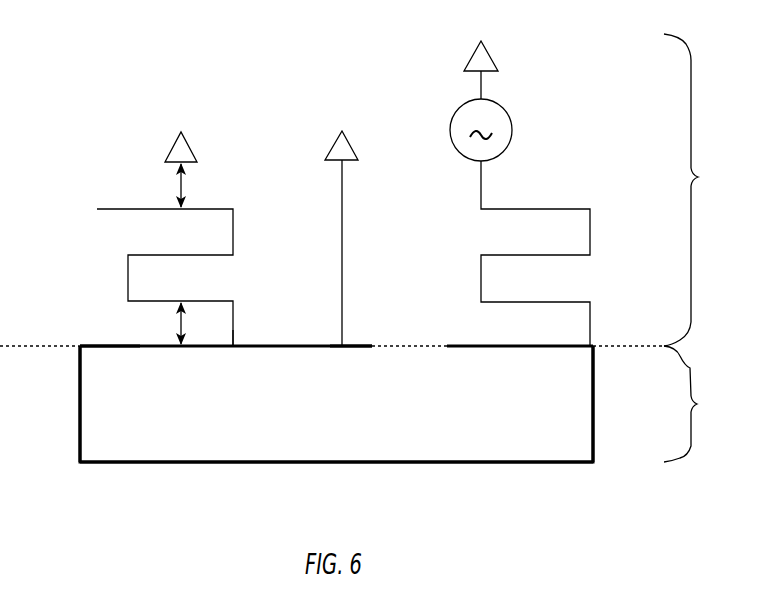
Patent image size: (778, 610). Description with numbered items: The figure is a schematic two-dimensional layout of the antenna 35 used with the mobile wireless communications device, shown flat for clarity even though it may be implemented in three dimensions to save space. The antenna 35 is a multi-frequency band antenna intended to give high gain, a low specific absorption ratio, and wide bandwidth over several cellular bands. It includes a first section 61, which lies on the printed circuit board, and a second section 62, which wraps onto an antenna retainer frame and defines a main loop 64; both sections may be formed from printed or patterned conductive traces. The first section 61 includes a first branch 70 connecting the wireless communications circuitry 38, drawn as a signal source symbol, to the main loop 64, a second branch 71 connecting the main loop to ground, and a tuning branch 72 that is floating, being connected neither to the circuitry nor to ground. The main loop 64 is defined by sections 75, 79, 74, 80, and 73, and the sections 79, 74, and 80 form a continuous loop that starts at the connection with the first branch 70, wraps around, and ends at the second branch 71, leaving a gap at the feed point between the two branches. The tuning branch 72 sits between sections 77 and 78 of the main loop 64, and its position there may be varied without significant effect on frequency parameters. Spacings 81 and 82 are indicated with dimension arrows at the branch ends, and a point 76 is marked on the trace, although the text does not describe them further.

The antenna 35 is at (106, 96).
The wireless communications circuitry 38 is at (511, 115).
The first section 61 is at (698, 190).
The second section 62 is at (698, 404).
The main loop 64 is at (502, 484).
The first branch 70 is at (514, 172).
The second branch 71 is at (342, 235).
The tuning branch 72 is at (108, 271).
The section of main loop 73 is at (240, 362).
The section of main loop 74 is at (142, 465).
The section of main loop 75 is at (510, 348).
The end of left conductive trace 76 is at (368, 345).
The section of main loop 77 is at (258, 345).
The section of main loop 78 is at (112, 350).
The section of main loop 79 is at (597, 400).
The section of main loop 80 is at (79, 395).
The gap between antenna and meander 81 is at (178, 182).
The gap between meander and substrate 82 is at (178, 323).